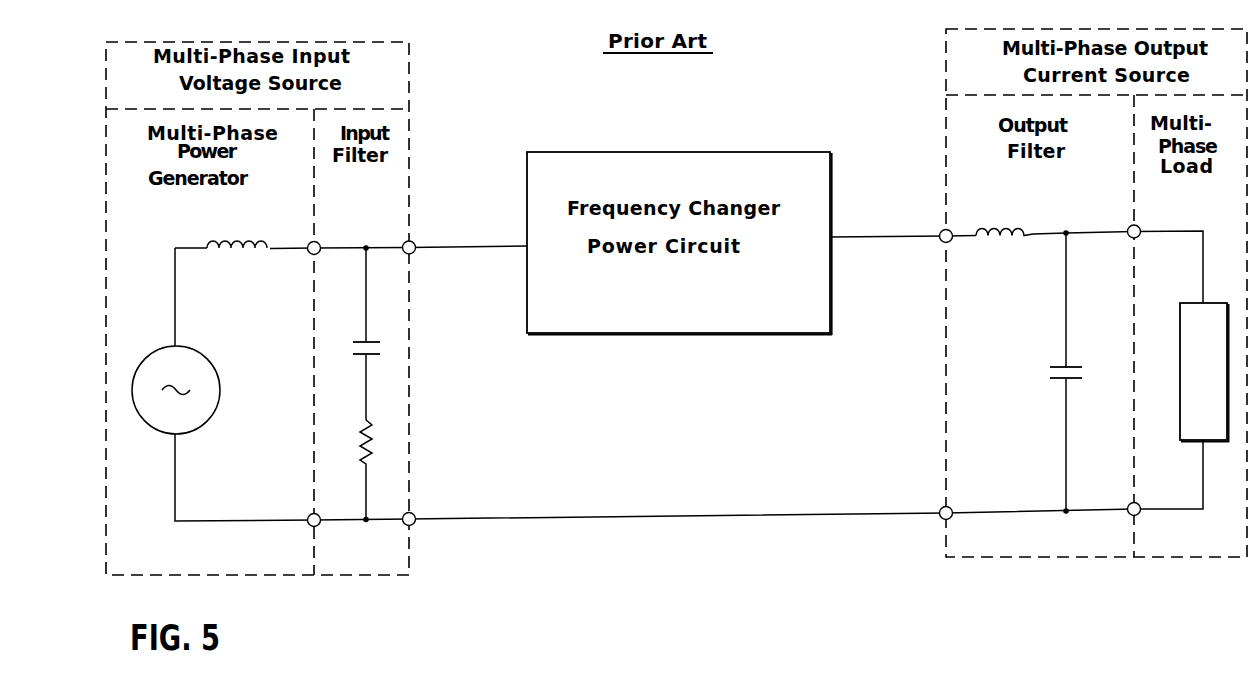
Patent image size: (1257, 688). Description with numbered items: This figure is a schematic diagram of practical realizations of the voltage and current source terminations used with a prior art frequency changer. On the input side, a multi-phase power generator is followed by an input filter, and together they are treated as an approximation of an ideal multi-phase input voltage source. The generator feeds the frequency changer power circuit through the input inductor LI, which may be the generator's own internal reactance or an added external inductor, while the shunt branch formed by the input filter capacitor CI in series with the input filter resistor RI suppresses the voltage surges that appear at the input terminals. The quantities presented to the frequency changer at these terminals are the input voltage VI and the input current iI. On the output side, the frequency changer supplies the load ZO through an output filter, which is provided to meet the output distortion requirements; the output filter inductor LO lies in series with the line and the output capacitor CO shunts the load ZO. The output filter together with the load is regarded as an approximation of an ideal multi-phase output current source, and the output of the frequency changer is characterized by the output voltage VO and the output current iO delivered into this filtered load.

The input inductor LI is at (245, 226).
The input filter capacitor CI is at (371, 334).
The input filter resistor RI is at (379, 453).
The output filter inductor LO is at (1004, 209).
The output capacitor CO is at (1075, 372).
The load ZO is at (1204, 372).
The input voltage VI is at (437, 270).
The output voltage VO is at (915, 269).
The input current iI is at (503, 230).
The output current iO is at (911, 222).